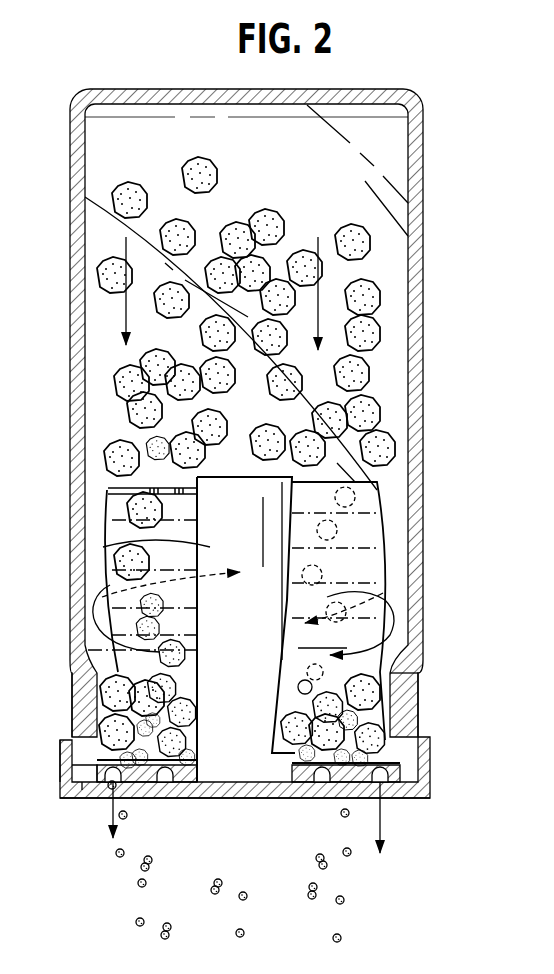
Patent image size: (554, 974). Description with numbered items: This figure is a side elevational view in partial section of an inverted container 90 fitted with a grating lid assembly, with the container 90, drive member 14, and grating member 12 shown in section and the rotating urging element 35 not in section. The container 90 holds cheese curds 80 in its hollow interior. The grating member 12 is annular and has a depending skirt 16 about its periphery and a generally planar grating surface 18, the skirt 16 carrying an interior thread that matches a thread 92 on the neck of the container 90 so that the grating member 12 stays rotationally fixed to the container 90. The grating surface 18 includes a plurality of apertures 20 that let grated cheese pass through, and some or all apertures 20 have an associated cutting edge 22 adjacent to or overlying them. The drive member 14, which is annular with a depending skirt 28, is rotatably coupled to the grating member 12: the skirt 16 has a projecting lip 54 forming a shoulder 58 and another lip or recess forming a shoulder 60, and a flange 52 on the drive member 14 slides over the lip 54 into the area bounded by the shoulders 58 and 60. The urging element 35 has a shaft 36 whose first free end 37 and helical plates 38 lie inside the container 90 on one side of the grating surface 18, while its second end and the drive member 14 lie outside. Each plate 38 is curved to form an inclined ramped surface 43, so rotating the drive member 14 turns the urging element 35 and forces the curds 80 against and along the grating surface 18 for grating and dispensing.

The container 90 is at (6, 45).
The cheese curds 80 is at (0, 135).
The ramped surface 43 is at (230, 629).
The first free end 37 is at (228, 477).
The plates 38 is at (95, 593).
The shaft 36 is at (103, 547).
The urging element 35 is at (383, 593).
The grating member 12 is at (430, 690).
The skirt 16 is at (418, 713).
The drive member 14 is at (442, 762).
The skirt 28 is at (432, 780).
The thread 92 is at (73, 703).
The shoulder 60 is at (73, 731).
The flange 52 is at (75, 752).
The shoulder 58 is at (72, 762).
The projecting lip 54 is at (82, 790).
The apertures 20 is at (168, 780).
The cutting edge 22 is at (207, 768).
The grating surface 18 is at (338, 783).